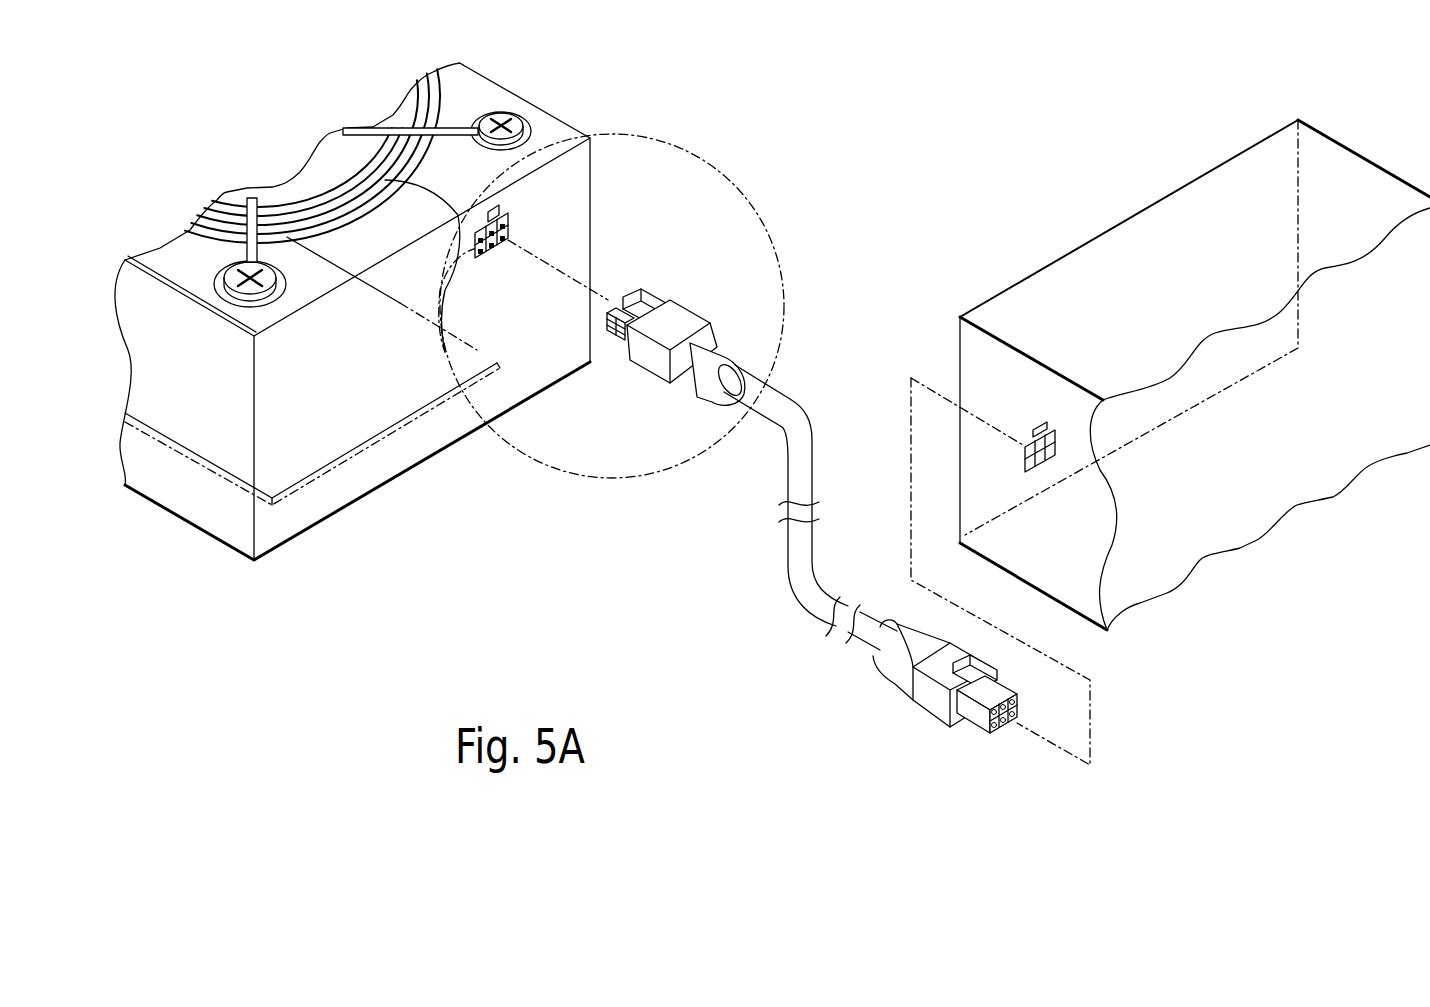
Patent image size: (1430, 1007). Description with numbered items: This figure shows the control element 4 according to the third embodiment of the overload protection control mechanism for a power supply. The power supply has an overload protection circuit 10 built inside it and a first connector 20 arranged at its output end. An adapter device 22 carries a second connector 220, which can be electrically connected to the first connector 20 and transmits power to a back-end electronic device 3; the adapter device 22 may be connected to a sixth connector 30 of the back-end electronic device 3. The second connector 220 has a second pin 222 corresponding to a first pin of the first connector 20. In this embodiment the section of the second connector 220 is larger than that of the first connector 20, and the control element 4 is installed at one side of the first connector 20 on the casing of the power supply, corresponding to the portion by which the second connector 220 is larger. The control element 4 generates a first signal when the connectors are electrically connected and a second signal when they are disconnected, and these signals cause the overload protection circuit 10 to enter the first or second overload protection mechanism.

The back-end electronic device 3 is at (1036, 259).
The control element 4 is at (463, 215).
The overload protection circuit 10 is at (380, 450).
The first connector 20 is at (521, 219).
The adapter device 22 is at (815, 395).
The sixth connector 30 is at (1023, 462).
The second connector 220 is at (690, 296).
The second pin 222 is at (613, 342).